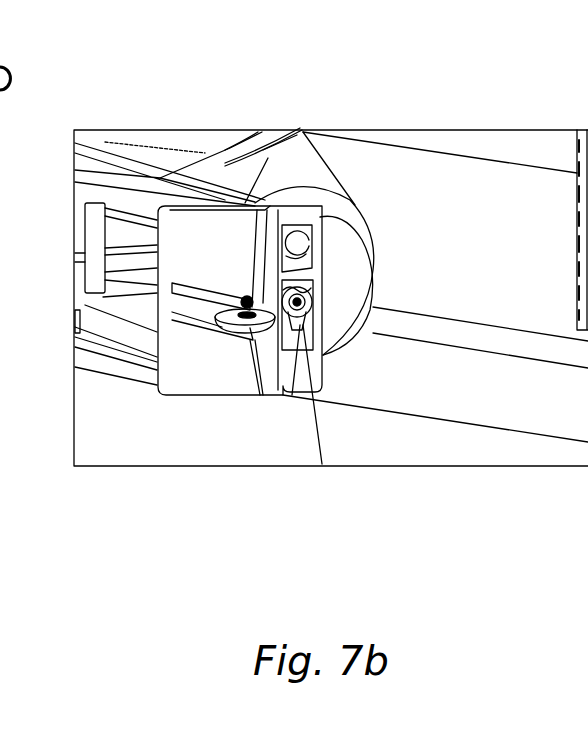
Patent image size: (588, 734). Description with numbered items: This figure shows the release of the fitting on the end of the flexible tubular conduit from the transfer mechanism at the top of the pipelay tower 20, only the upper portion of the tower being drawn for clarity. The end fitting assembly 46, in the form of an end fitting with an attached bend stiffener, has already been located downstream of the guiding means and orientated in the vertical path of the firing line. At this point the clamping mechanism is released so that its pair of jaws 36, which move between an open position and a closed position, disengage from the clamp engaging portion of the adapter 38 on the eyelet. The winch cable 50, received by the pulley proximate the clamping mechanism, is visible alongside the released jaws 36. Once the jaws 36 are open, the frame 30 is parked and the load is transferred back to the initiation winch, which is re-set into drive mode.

The pipelay tower 20 is at (531, 395).
The frame 30 is at (85, 195).
The jaws 36 is at (298, 250).
The adapter 38 is at (300, 303).
The end fitting assembly 46 is at (307, 167).
The winch cable 50 is at (322, 443).